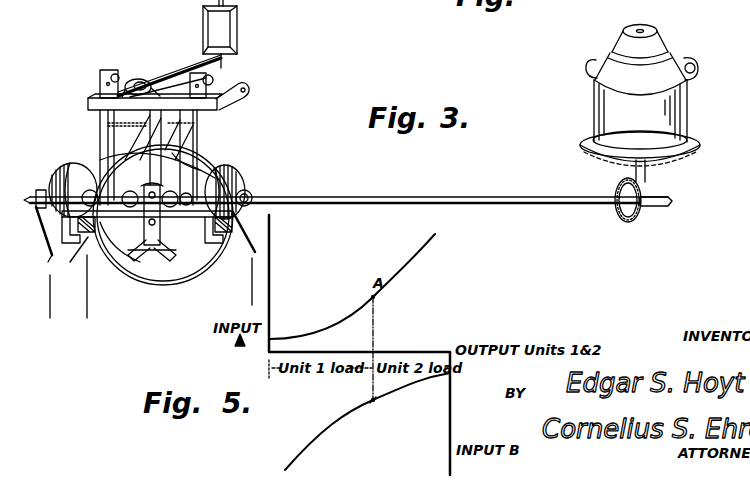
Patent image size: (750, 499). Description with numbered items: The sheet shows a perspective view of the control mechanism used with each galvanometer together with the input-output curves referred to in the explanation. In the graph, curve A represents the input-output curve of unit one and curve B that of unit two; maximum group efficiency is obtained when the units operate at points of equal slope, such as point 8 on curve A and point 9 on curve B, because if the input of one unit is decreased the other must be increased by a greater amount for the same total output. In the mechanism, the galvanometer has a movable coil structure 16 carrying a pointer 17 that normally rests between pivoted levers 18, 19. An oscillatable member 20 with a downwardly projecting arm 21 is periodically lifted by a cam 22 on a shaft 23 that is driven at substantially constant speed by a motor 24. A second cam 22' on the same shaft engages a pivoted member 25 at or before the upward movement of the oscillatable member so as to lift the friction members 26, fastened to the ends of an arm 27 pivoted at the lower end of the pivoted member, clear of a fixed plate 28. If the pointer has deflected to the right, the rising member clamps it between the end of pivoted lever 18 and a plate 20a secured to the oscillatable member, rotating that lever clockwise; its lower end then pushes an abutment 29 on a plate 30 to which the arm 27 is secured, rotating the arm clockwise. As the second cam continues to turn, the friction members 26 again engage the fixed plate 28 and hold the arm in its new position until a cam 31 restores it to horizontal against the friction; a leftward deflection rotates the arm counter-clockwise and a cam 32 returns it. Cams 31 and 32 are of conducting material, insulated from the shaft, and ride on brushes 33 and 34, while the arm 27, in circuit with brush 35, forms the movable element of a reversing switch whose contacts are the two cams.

In FIG. 5, the point on curve A 8 is at (379, 302).
In FIG. 5, the point on curve B 9 is at (378, 408).
In FIG. 3, the movable coil structure 16 is at (237, 24).
In FIG. 3, the pointer 17 is at (183, 66).
In FIG. 3, the pivoted lever 18 is at (212, 80).
In FIG. 3, the pivoted lever 19 is at (108, 70).
In FIG. 3, the oscillatable member 20 is at (236, 102).
In FIG. 3, the plate 20a is at (145, 80).
In FIG. 3, the downwardly projecting arm 21 is at (172, 153).
In FIG. 3, the cam 22 is at (257, 184).
In FIG. 3, the second cam 22' is at (72, 175).
In FIG. 3, the shaft 23 is at (502, 197).
In FIG. 3, the motor 24 is at (606, 116).
In FIG. 3, the pivoted member 25 is at (145, 148).
In FIG. 3, the friction member 26 is at (87, 280).
In FIG. 3, the arm 27 is at (112, 230).
In FIG. 3, the fixed plate 28 is at (170, 288).
In FIG. 3, the abutment 29 is at (143, 265).
In FIG. 3, the plate 30 is at (98, 222).
In FIG. 3, the cam 31 is at (37, 181).
In FIG. 3, the cam 32 is at (250, 192).
In FIG. 3, the brush 33 is at (80, 258).
In FIG. 3, the brush 34 is at (248, 248).
In FIG. 3, the brush 35 is at (46, 258).